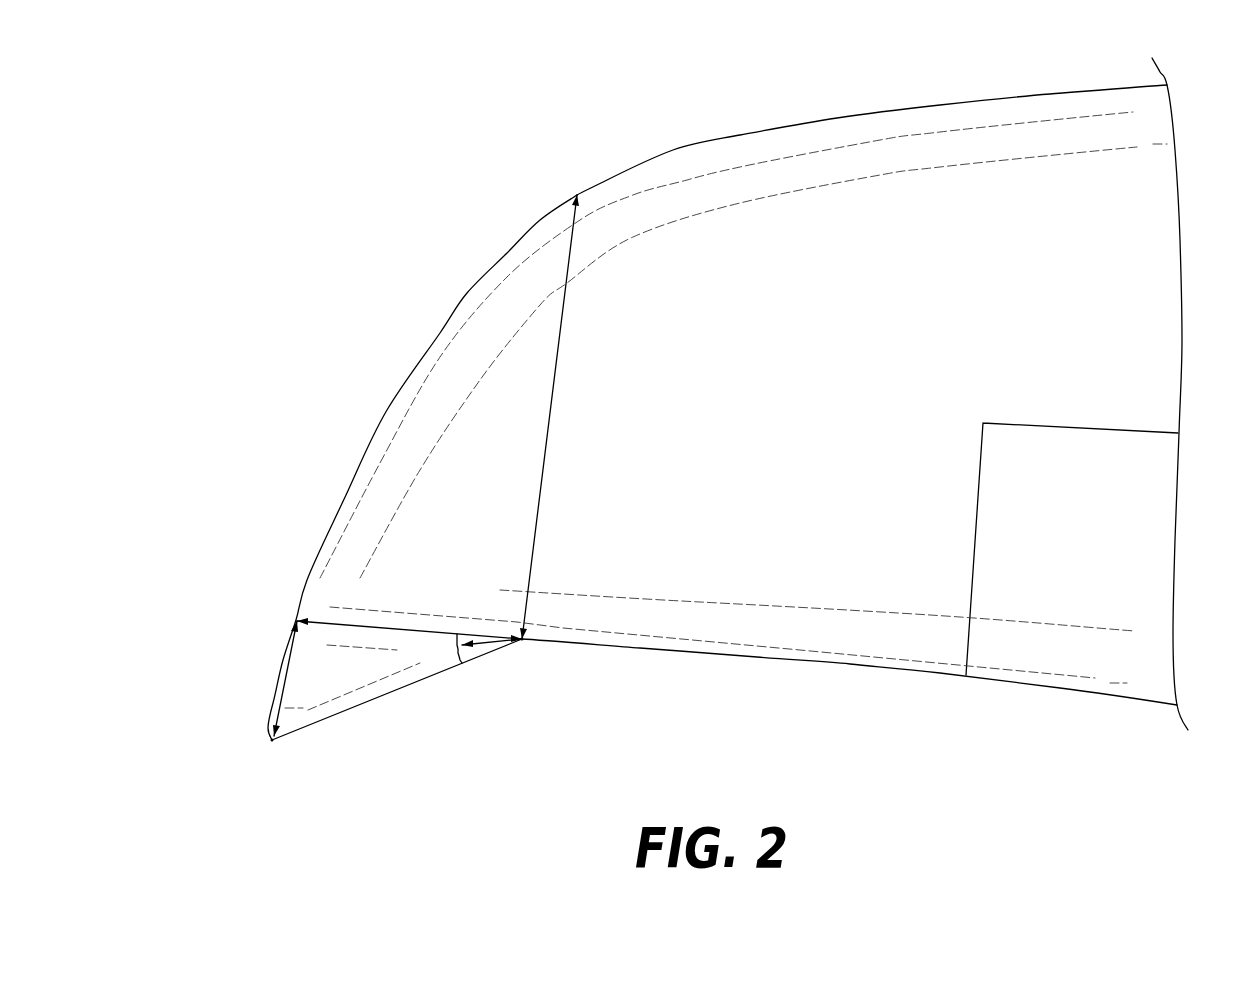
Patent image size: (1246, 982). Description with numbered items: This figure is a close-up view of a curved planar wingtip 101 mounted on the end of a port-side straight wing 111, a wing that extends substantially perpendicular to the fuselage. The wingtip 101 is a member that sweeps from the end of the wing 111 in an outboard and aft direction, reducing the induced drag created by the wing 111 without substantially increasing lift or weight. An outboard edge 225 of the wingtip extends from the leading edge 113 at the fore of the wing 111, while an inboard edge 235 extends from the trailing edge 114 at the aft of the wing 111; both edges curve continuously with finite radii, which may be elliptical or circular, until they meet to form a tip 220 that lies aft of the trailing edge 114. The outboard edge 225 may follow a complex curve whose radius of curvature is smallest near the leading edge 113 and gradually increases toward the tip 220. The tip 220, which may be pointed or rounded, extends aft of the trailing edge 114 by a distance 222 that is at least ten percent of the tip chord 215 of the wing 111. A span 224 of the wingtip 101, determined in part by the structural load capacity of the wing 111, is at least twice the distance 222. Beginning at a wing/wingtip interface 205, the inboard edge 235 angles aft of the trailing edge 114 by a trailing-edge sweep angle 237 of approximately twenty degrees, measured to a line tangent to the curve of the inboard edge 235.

The curved planar wingtip 101 is at (755, 409).
The port-side straight wing 111 is at (1110, 275).
The leading edge 113 is at (837, 118).
The trailing edge 114 is at (757, 657).
The wing/wingtip interface 205 is at (522, 646).
The tip chord 215 is at (553, 410).
The tip 220 is at (258, 743).
The distance 222 is at (285, 680).
The span 224 is at (410, 626).
The outboard edge 225 is at (387, 410).
The inboard edge 235 is at (383, 687).
The trailing-edge sweep angle 237 is at (463, 648).